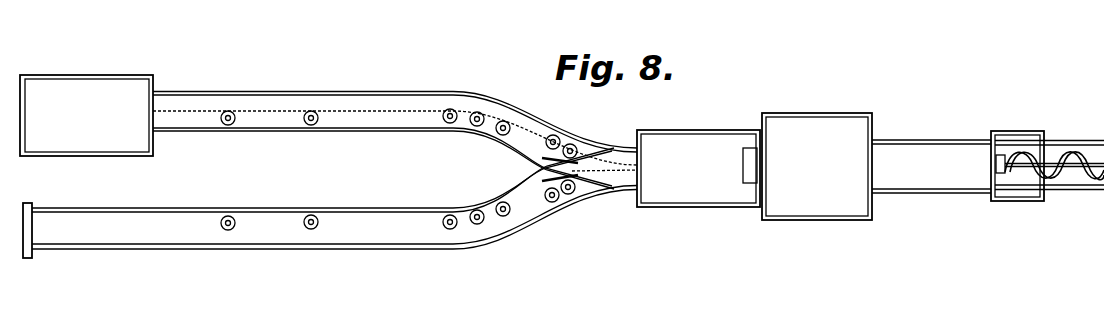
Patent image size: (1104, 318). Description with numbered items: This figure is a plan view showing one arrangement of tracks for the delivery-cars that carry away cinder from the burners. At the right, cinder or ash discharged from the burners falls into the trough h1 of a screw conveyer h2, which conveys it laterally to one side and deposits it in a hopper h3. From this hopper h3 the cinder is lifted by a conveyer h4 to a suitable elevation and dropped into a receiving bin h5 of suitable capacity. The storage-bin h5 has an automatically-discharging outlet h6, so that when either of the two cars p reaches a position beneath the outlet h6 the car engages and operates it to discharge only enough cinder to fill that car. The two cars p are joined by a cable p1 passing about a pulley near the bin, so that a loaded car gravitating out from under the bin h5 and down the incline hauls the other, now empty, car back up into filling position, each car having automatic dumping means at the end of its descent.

The car p is at (92, 83).
The cable p1 is at (368, 110).
The trough h1 is at (1067, 133).
The screw conveyer h2 is at (1068, 180).
The hopper h3 is at (1018, 137).
The conveyer h4 is at (938, 148).
The receiving bin h5 is at (830, 108).
The outlet h6 is at (752, 160).